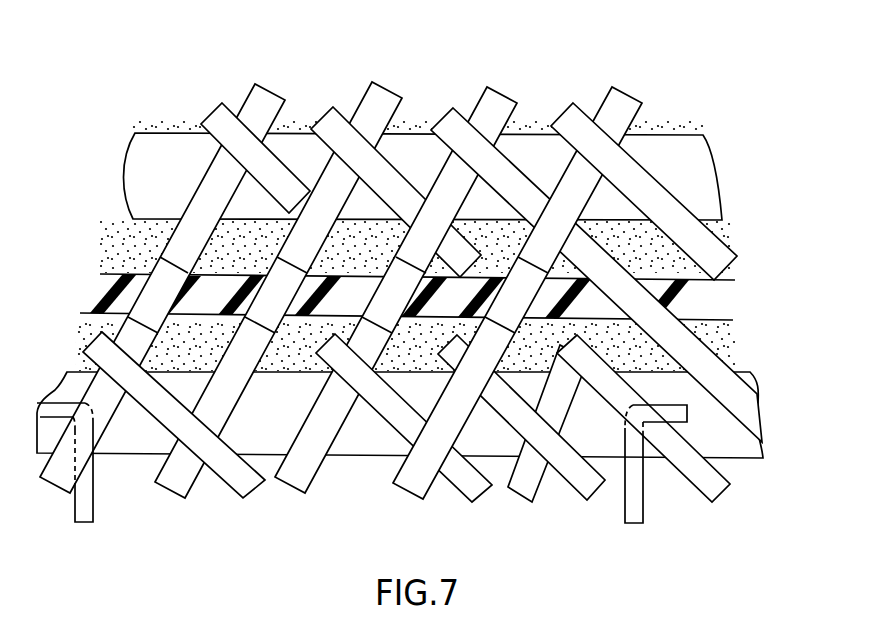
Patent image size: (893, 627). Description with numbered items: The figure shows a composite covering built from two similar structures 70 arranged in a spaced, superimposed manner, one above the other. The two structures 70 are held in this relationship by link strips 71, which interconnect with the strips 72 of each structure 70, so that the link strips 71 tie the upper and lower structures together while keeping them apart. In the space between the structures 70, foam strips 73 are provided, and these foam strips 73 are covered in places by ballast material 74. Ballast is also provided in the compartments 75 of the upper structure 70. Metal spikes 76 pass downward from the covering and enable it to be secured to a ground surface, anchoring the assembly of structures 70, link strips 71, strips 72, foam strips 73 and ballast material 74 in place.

The structure 70 is at (737, 204).
The link strip 71 is at (272, 127).
The strip 72 is at (330, 127).
The foam strip 73 is at (697, 306).
The ballast material 74 is at (110, 328).
The compartment 75 is at (437, 116).
The metal spike 76 is at (85, 517).